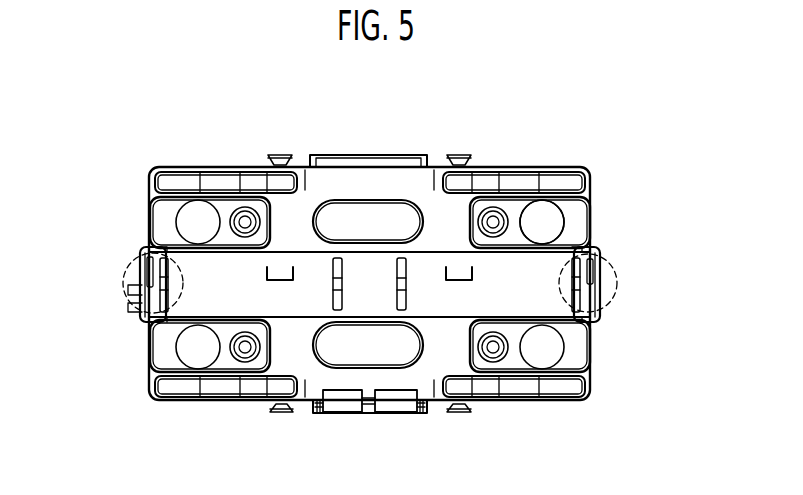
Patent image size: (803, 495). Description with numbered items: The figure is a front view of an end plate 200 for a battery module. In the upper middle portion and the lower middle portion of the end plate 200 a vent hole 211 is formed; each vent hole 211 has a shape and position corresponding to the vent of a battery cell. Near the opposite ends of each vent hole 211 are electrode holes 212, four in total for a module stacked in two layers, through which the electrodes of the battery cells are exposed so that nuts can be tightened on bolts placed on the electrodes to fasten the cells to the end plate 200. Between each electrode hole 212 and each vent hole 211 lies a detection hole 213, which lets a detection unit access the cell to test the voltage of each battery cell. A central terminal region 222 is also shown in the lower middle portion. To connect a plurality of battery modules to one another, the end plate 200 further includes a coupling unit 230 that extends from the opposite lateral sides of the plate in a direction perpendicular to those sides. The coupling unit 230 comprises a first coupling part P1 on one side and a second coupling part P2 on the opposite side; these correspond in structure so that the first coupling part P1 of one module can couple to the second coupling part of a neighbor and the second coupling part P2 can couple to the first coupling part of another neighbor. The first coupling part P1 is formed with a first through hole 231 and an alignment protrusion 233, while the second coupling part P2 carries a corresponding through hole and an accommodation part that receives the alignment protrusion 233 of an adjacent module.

The end plate 200 is at (86, 133).
The vent hole 211 is at (354, 220).
The electrode hole 212 is at (544, 226).
The detection hole 213 is at (494, 220).
The connector terminals 222 is at (387, 382).
The coupling unit 230 is at (130, 289).
The first through hole 231 is at (142, 262).
The alignment protrusion 233 is at (126, 306).
The first coupling part P1 is at (140, 252).
The second coupling part P2 is at (600, 252).